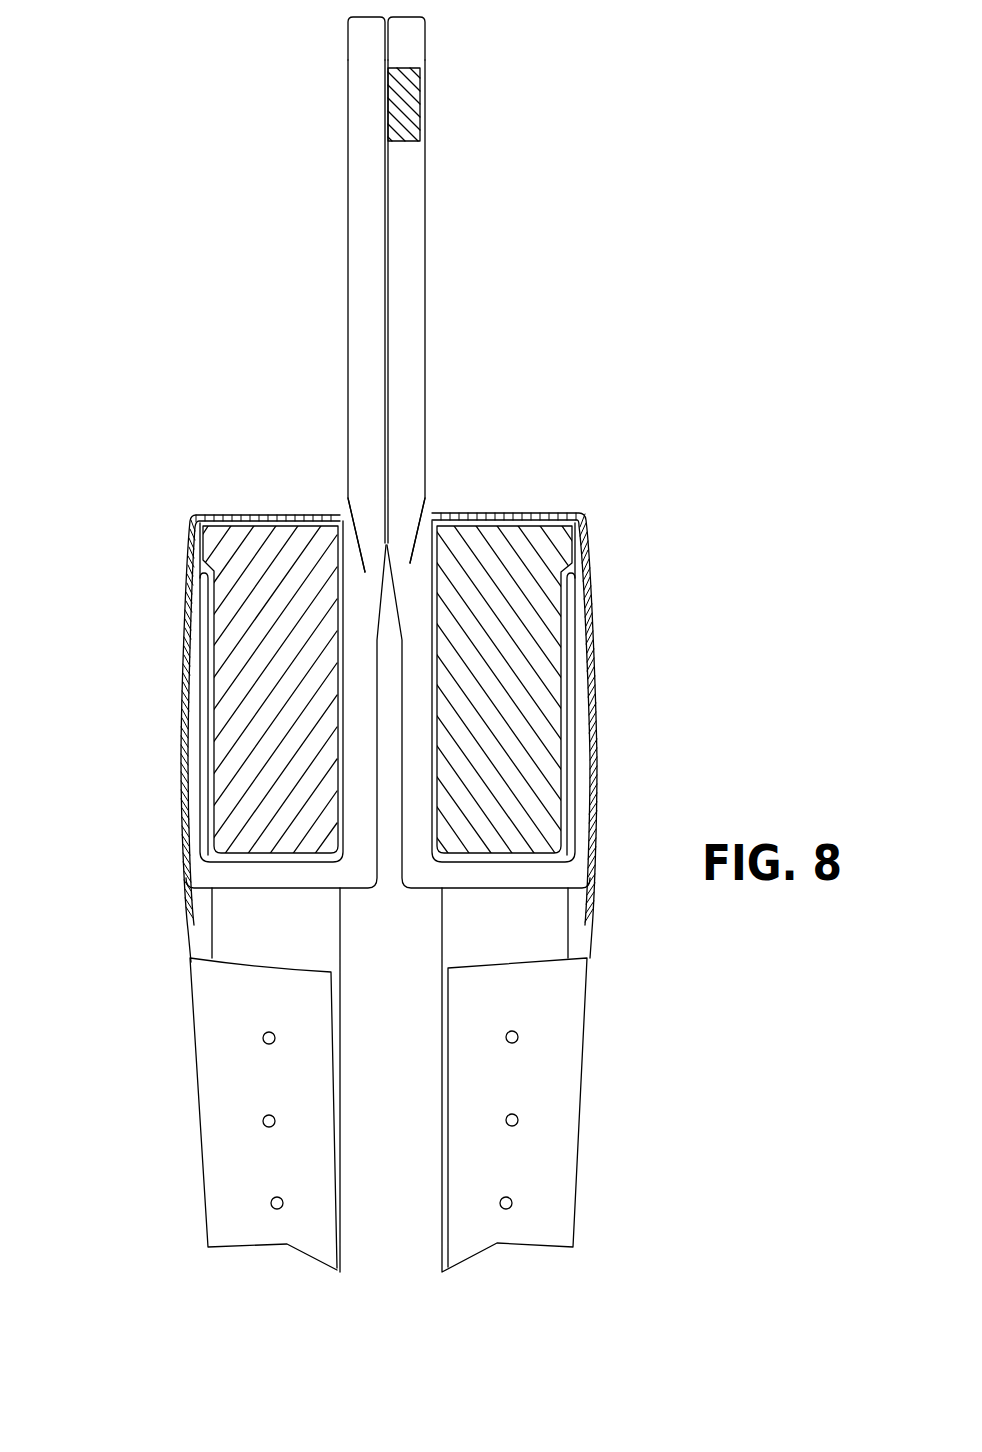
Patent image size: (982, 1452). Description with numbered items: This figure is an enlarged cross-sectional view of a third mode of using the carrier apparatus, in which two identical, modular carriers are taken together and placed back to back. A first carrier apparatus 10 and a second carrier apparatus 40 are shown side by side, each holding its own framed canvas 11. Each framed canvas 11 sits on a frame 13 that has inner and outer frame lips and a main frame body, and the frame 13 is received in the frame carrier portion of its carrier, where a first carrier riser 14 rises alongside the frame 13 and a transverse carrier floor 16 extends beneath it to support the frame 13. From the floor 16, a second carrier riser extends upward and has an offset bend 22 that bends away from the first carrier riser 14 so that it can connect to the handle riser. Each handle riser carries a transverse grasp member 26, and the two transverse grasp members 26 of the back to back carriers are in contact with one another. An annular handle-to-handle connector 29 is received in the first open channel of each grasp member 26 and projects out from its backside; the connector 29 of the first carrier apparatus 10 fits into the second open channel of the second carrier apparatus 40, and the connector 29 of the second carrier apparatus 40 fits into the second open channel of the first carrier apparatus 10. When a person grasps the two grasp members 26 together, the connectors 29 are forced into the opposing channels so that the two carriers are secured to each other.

The carrier apparatus 10 is at (340, 203).
The second carrier apparatus 40 is at (435, 242).
The transverse grasp member 26 is at (360, 105).
The annular handle-to-handle connector 29 is at (407, 118).
The offset bend 22 is at (357, 553).
The frame 13 is at (215, 660).
The first carrier riser 14 is at (203, 680).
The transverse carrier floor 16 is at (282, 877).
The framed canvas 11 is at (242, 1092).